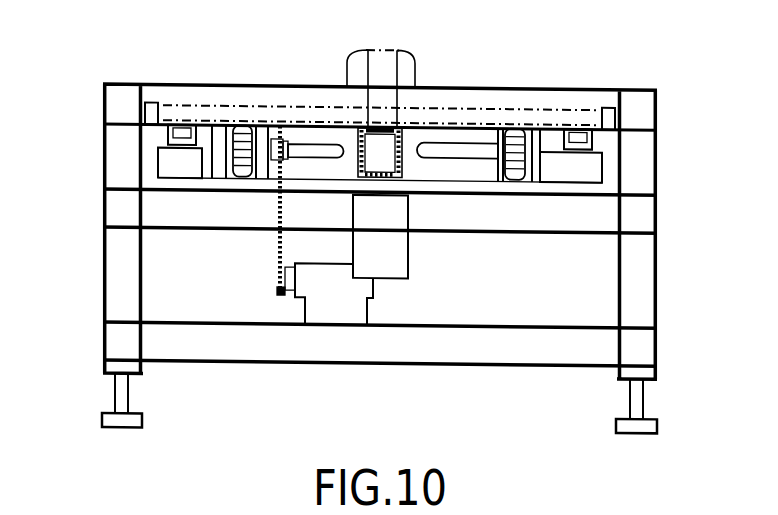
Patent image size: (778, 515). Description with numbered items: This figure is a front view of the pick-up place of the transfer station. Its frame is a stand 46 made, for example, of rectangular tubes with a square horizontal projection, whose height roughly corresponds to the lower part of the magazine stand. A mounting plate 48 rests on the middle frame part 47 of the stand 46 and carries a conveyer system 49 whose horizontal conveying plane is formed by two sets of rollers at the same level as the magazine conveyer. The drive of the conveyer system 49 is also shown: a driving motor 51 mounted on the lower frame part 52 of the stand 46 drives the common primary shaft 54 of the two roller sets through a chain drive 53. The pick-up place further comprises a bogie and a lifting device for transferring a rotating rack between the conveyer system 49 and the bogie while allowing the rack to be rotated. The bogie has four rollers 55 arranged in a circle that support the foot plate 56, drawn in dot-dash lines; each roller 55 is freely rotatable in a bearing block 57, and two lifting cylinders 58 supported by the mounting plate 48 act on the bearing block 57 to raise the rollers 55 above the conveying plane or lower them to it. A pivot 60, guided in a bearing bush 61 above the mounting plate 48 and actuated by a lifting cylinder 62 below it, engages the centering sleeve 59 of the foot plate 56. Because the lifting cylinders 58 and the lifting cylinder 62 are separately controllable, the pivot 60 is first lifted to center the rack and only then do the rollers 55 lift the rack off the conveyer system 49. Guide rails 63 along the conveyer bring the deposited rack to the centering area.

The stand 46 is at (668, 318).
The middle frame part 47 is at (577, 217).
The mounting plate 48 is at (597, 181).
The conveyer system 49 is at (452, 136).
The driving motor 51 is at (332, 284).
The lower frame part 52 is at (559, 345).
The chain drive 53 is at (282, 291).
The primary shaft 54 is at (330, 144).
The rollers 55 is at (180, 123).
The foot plate 56 is at (277, 108).
The bearing block 57 is at (160, 131).
The lifting cylinders 58 is at (173, 162).
The centering sleeve 59 is at (388, 132).
The pivot 60 is at (380, 147).
The bearing bush 61 is at (405, 163).
The lifting cylinder 62 is at (387, 260).
The guide rails 63 is at (150, 112).